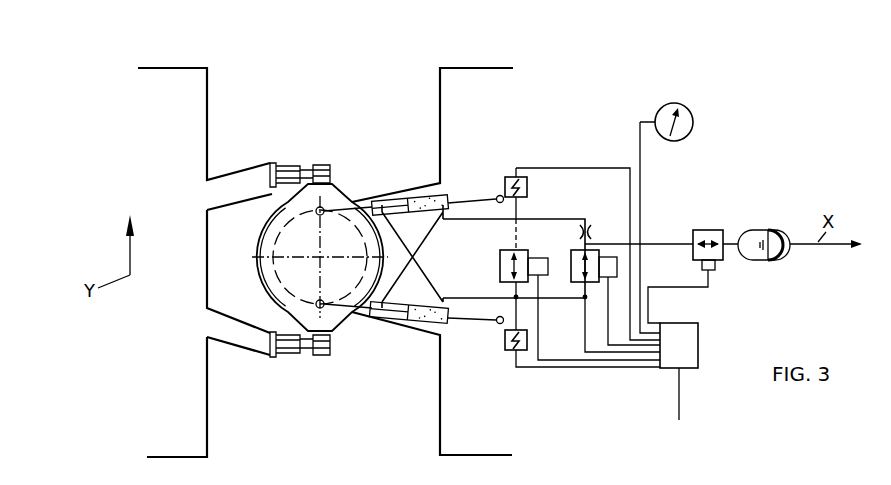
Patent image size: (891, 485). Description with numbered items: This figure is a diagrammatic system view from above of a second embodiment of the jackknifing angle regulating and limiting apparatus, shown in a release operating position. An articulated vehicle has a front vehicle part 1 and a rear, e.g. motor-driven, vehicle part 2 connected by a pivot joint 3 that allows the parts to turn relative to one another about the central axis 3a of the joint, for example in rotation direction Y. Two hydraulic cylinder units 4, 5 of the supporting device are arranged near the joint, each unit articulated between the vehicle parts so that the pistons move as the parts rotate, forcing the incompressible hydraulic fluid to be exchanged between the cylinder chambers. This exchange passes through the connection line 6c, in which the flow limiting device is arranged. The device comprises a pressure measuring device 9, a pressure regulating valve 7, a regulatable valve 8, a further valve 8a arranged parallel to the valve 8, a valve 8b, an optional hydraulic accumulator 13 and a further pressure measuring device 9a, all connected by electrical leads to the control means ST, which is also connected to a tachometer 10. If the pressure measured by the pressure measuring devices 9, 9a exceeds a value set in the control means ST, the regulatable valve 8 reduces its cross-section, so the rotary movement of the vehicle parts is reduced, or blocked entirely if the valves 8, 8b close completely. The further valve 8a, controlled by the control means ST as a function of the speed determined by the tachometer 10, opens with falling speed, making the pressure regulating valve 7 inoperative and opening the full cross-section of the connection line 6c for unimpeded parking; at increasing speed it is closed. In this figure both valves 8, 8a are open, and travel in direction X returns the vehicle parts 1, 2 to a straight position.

The front vehicle part 1 is at (460, 82).
The rear vehicle part 2 is at (183, 85).
The pivot joint 3 is at (310, 233).
The central axis of the joint 3a is at (327, 247).
The hydraulic cylinder unit 4 is at (417, 180).
The hydraulic cylinder unit 5 is at (415, 330).
The connection line 6c is at (463, 224).
The pressure regulating valve 7 is at (594, 233).
The regulatable valve 8 is at (632, 266).
The further valve 8a is at (519, 250).
The valve 8b is at (733, 270).
The pressure measuring device 9 is at (510, 177).
The further pressure measuring device 9a is at (512, 353).
The tachometer 10 is at (694, 121).
The hydraulic accumulator 13 is at (775, 230).
The control means ST is at (705, 338).